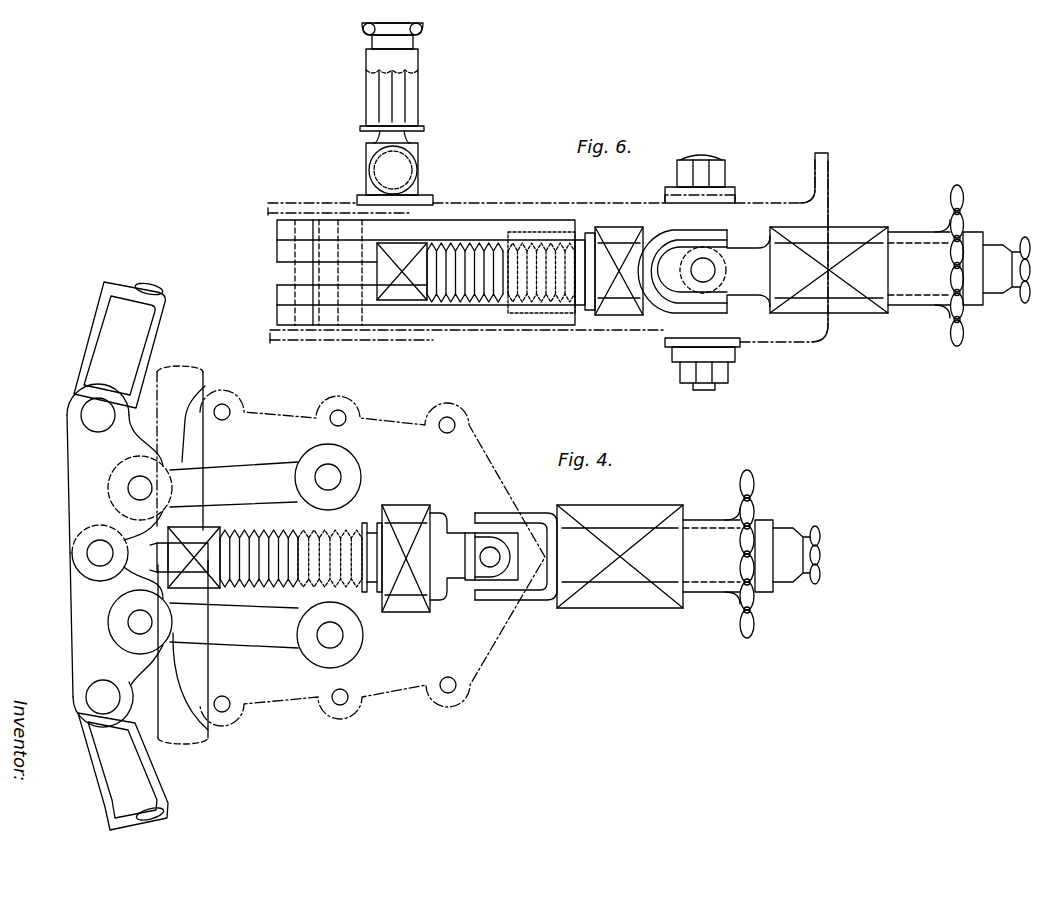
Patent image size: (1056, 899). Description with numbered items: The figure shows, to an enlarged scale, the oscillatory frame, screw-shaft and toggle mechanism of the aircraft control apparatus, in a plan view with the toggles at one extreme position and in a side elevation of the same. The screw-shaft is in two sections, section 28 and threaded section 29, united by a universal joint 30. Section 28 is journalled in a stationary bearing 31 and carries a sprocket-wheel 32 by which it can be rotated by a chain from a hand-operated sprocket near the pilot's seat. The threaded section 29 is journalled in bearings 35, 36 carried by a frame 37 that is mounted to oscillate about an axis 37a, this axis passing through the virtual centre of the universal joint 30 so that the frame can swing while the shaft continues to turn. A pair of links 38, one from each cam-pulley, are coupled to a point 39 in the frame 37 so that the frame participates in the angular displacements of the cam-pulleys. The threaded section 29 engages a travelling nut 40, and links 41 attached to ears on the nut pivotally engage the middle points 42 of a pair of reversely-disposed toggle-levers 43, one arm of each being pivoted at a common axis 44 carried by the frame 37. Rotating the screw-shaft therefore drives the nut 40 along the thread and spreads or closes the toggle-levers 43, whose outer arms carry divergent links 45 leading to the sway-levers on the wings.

In FIG. 6, the screw-shaft section 28 is at (850, 297).
In FIG. 4, the screw-shaft section 28 is at (622, 584).
In FIG. 6, the threaded screw-shaft section 29 is at (507, 300).
In FIG. 4, the threaded screw-shaft section 29 is at (330, 575).
In FIG. 6, the universal joint 30 is at (704, 268).
In FIG. 4, the universal joint 30 is at (486, 555).
In FIG. 6, the stationary bearing 31 is at (845, 237).
In FIG. 4, the stationary bearing 31 is at (642, 528).
In FIG. 6, the sprocket-wheel 32 is at (960, 210).
In FIG. 4, the sprocket-wheel 32 is at (750, 495).
In FIG. 6, the bearing 35 is at (624, 240).
In FIG. 4, the bearing 35 is at (415, 513).
In FIG. 6, the bearing 36 is at (403, 286).
In FIG. 4, the bearing 36 is at (212, 528).
In FIG. 6, the oscillatory frame 37 is at (460, 205).
In FIG. 4, the oscillatory frame 37 is at (395, 432).
In FIG. 6, the axis of oscillation 37a is at (705, 391).
In FIG. 6, the link 38 is at (377, 172).
In FIG. 4, the link 38 is at (209, 673).
In FIG. 6, the point in the frame 39 is at (405, 142).
In FIG. 4, the point in the frame 39 is at (165, 568).
In FIG. 4, the travelling nut 40 is at (353, 507).
In FIG. 4, the link 41 is at (234, 625).
In FIG. 4, the middle point of toggle-lever 42 is at (145, 625).
In FIG. 4, the toggle-lever 43 is at (80, 655).
In FIG. 6, the common axis 44 is at (297, 288).
In FIG. 4, the common axis 44 is at (102, 548).
In FIG. 4, the divergent link 45 is at (103, 800).